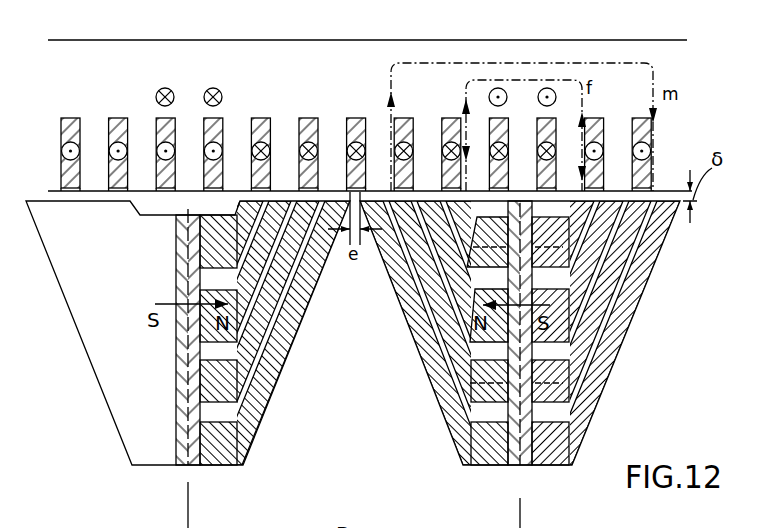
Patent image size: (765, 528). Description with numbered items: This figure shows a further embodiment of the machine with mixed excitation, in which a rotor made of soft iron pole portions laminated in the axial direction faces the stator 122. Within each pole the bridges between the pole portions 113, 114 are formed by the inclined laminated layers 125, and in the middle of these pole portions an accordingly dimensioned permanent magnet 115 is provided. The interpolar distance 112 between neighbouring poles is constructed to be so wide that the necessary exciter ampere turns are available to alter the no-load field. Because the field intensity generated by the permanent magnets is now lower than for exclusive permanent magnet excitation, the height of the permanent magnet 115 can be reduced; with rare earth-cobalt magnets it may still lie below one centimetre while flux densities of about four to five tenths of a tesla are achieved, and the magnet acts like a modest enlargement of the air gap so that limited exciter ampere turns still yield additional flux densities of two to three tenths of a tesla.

The stator core 122 is at (681, 60).
The interpolar distance 112 is at (488, 207).
The pole portion 113 is at (440, 407).
The pole portion 114 is at (268, 408).
The permanent magnet 115 is at (181, 463).
The inclined permanent magnet layers 125 is at (627, 308).